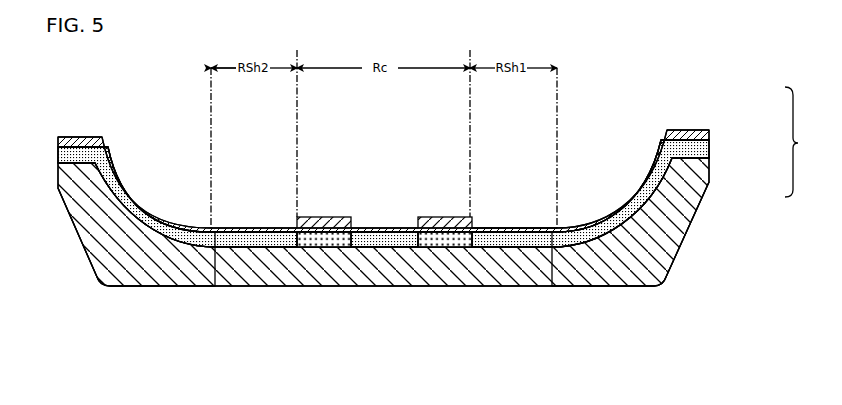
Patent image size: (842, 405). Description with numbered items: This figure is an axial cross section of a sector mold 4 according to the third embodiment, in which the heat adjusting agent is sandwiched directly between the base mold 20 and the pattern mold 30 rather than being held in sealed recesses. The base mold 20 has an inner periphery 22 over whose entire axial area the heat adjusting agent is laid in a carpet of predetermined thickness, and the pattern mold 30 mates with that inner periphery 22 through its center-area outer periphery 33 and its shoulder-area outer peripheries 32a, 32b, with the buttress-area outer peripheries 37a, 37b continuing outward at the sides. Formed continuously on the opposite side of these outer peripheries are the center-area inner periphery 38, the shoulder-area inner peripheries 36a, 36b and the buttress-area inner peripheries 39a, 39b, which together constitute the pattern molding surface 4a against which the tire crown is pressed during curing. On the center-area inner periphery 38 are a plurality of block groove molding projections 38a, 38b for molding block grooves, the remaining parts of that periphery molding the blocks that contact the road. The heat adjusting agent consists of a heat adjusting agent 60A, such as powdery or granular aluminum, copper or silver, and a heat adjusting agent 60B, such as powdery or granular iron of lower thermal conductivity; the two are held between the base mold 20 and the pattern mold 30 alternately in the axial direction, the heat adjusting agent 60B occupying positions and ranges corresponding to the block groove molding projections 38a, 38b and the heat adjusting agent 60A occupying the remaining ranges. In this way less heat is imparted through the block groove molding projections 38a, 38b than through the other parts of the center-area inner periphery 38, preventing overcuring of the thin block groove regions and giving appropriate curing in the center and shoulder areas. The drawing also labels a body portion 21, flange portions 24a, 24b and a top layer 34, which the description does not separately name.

The sector mold 4 is at (797, 142).
The pattern molding surface 4a is at (384, 139).
The base mold 20 is at (715, 178).
The substrate body 21 is at (505, 286).
The inner periphery 22 is at (513, 229).
The flange portion 24a is at (700, 153).
The flange portion 24b is at (58, 162).
The pattern mold 30 is at (713, 117).
The shoulder-area outer periphery 32a is at (553, 246).
The shoulder-area outer periphery 32b is at (222, 240).
The center-area outer periphery 33 is at (358, 242).
The protective coating 34 is at (88, 137).
The shoulder-area inner periphery 36a is at (548, 228).
The shoulder-area inner periphery 36b is at (221, 228).
The buttress-area outer periphery 37a is at (678, 223).
The buttress-area outer periphery 37b is at (140, 218).
The center-area inner periphery 38 is at (378, 227).
The block groove molding projection 38a is at (447, 217).
The block groove molding projection 38b is at (313, 217).
The buttress-area inner periphery 39a is at (628, 196).
The buttress-area inner periphery 39b is at (152, 214).
The heat adjusting agent 60A is at (252, 241).
The heat adjusting agent 60B is at (318, 241).